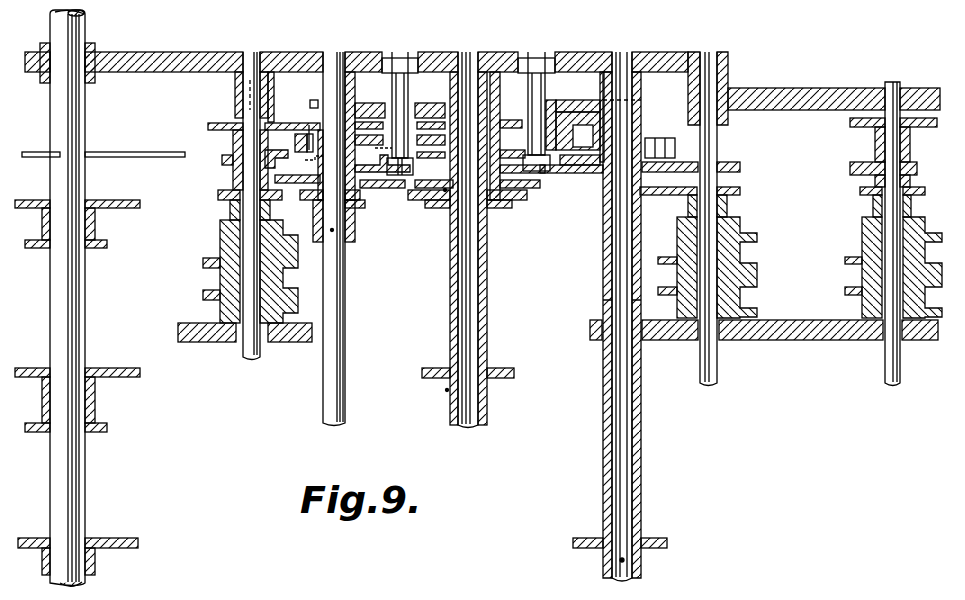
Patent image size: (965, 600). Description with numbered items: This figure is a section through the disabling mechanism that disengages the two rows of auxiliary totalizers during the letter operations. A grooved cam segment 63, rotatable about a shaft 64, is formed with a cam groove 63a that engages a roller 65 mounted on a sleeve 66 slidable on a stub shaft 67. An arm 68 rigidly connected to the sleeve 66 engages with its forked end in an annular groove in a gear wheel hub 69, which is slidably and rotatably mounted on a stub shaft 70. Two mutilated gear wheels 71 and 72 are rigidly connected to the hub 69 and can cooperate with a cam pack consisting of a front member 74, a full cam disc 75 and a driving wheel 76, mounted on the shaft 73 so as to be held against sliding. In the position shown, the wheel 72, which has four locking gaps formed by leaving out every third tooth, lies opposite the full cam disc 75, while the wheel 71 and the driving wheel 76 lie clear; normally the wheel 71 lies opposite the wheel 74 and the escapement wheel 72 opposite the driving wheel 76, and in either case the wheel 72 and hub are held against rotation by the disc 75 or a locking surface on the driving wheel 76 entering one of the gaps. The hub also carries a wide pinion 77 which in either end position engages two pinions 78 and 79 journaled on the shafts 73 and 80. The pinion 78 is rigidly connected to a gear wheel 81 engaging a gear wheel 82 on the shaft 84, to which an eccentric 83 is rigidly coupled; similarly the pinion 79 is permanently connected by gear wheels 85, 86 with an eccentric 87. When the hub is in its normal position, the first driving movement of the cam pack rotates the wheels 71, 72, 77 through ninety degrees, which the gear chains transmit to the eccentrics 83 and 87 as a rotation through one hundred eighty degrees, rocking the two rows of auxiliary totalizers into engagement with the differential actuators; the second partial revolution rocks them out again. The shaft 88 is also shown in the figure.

The grooved cam segment 63 is at (586, 120).
The cam groove 63a is at (590, 160).
The shaft 64 is at (620, 58).
The roller 65 is at (572, 132).
The sleeve 66 is at (557, 100).
The stub shaft 67 is at (537, 58).
The arm 68 is at (512, 150).
The gear wheel hub 69 is at (422, 103).
The stub shaft 70 is at (400, 58).
The mutilated gear wheel 71 is at (374, 160).
The mutilated gear wheel 72 is at (432, 132).
The shaft 73 is at (334, 54).
The cam pack front member 74 is at (297, 155).
The full cam disc 75 is at (294, 144).
The driving wheel 76 is at (298, 124).
The wide pinion 77 is at (366, 103).
The pinion 78 is at (313, 101).
The pinion 79 is at (494, 104).
The shaft 80 is at (467, 54).
The gear wheel 81 is at (305, 125).
The gear wheel 82 is at (222, 124).
The eccentric 83 is at (221, 160).
The shaft 84 is at (251, 54).
The gear wheel 85 is at (508, 120).
The gear wheel 86 is at (866, 127).
The eccentric 87 is at (849, 168).
The shaft 88 is at (890, 84).